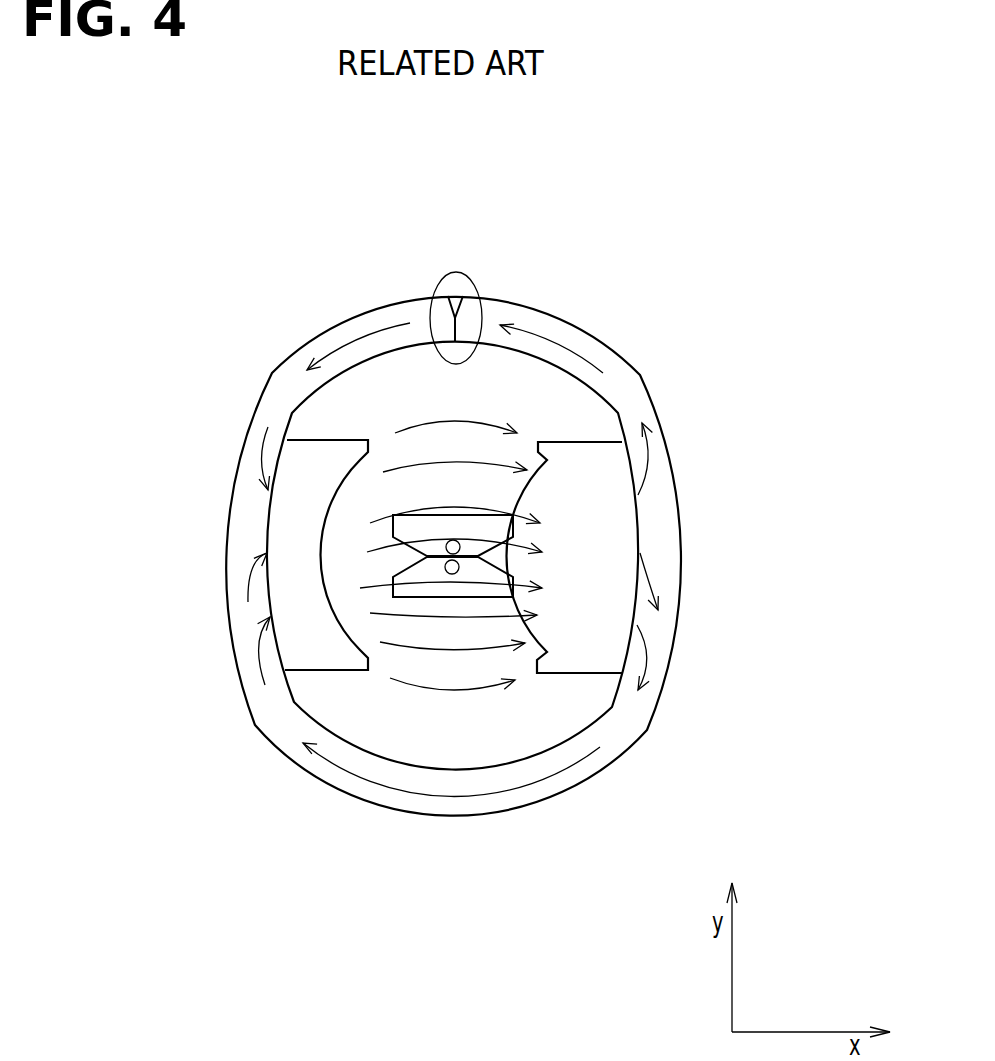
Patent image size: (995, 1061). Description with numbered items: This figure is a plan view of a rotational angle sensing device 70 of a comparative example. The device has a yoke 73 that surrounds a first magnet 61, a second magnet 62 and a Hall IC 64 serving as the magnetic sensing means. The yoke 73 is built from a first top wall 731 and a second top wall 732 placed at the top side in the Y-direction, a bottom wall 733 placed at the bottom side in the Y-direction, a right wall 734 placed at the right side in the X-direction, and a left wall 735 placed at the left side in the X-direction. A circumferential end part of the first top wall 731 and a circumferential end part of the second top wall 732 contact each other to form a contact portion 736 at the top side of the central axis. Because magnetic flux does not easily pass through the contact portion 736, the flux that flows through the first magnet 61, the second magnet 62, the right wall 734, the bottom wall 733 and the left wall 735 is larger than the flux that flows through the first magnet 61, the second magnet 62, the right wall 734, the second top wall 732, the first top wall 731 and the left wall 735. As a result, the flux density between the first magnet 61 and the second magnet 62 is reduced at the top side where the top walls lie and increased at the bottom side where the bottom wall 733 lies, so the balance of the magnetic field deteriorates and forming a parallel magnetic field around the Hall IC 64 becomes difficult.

The rotational angle sensing device 70 is at (623, 150).
The yoke 73 is at (280, 370).
The first top wall 731 is at (368, 317).
The second top wall 732 is at (540, 317).
The bottom wall 733 is at (467, 807).
The right wall 734 is at (665, 578).
The left wall 735 is at (237, 588).
The contact portion 736 is at (450, 272).
The first magnet 61 is at (313, 655).
The second magnet 62 is at (588, 662).
The Hall IC 64 is at (472, 588).